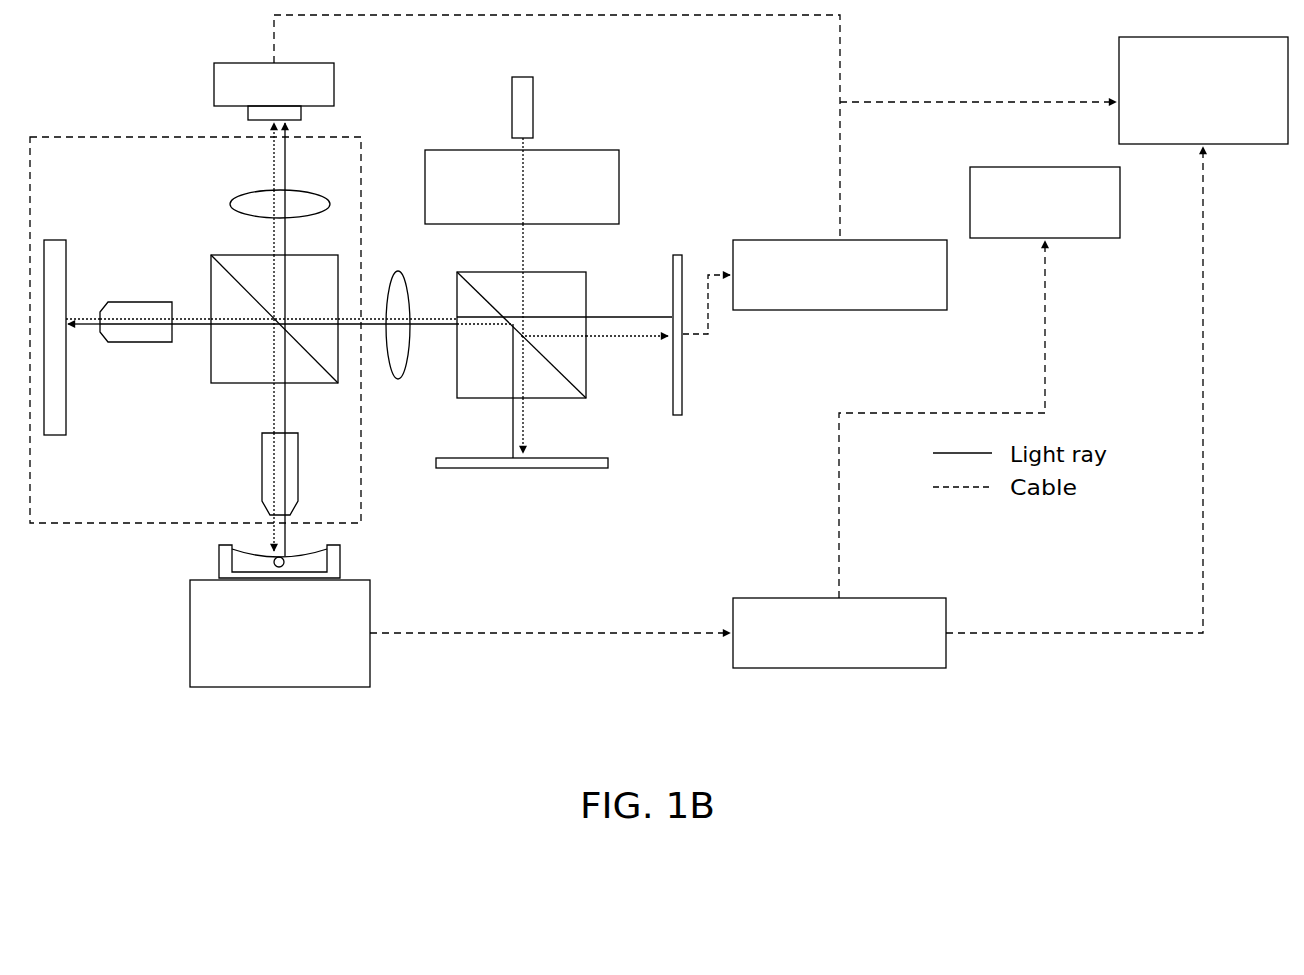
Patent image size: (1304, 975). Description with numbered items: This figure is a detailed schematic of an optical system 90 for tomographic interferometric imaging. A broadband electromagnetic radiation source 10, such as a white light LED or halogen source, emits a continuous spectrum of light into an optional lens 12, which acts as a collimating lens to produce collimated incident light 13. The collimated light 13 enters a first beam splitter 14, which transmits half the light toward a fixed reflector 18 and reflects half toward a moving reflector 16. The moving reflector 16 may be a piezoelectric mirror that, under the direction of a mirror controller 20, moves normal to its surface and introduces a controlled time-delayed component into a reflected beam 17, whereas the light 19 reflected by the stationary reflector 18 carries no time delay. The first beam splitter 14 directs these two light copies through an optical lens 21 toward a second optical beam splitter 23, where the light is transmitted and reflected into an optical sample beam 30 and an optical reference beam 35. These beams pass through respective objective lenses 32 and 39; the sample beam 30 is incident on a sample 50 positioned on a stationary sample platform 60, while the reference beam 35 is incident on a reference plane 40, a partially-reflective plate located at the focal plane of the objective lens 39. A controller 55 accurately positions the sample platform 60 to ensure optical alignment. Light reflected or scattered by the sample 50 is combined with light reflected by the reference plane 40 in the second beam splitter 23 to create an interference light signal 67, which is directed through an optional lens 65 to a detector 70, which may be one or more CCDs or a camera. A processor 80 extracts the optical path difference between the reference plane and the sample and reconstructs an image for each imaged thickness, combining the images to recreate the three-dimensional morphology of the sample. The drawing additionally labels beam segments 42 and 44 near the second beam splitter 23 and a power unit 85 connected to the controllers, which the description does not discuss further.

The broadband electromagnetic radiation source 10 is at (555, 86).
The lens 12 is at (522, 181).
The collimated incident light 13 is at (537, 248).
The first beam splitter 14 is at (521, 335).
The moving reflector 16 is at (682, 358).
The reflected beam 17 is at (629, 310).
The fixed reflector 18 is at (522, 515).
The reflected light 19 is at (500, 428).
The mirror controller 20 is at (840, 275).
The optical lens 21 is at (397, 343).
The second optical beam splitter 23 is at (274, 319).
The optical sample beam 30 is at (274, 337).
The objective lens 32 is at (261, 494).
The optical reference beam 35 is at (139, 343).
The objective lens 39 is at (136, 308).
The reference plane 40 is at (195, 330).
The light ray 42 is at (297, 408).
The light ray 44 is at (138, 305).
The sample 50 is at (263, 561).
The controller 55 is at (839, 633).
The sample platform 60 is at (280, 633).
The lens 65 is at (264, 222).
The interference light signal 67 is at (296, 156).
The detector 70 is at (197, 80).
The processor 80 is at (1064, 90).
The power supply 85 is at (1045, 202).
The optical system 90 is at (1075, 422).